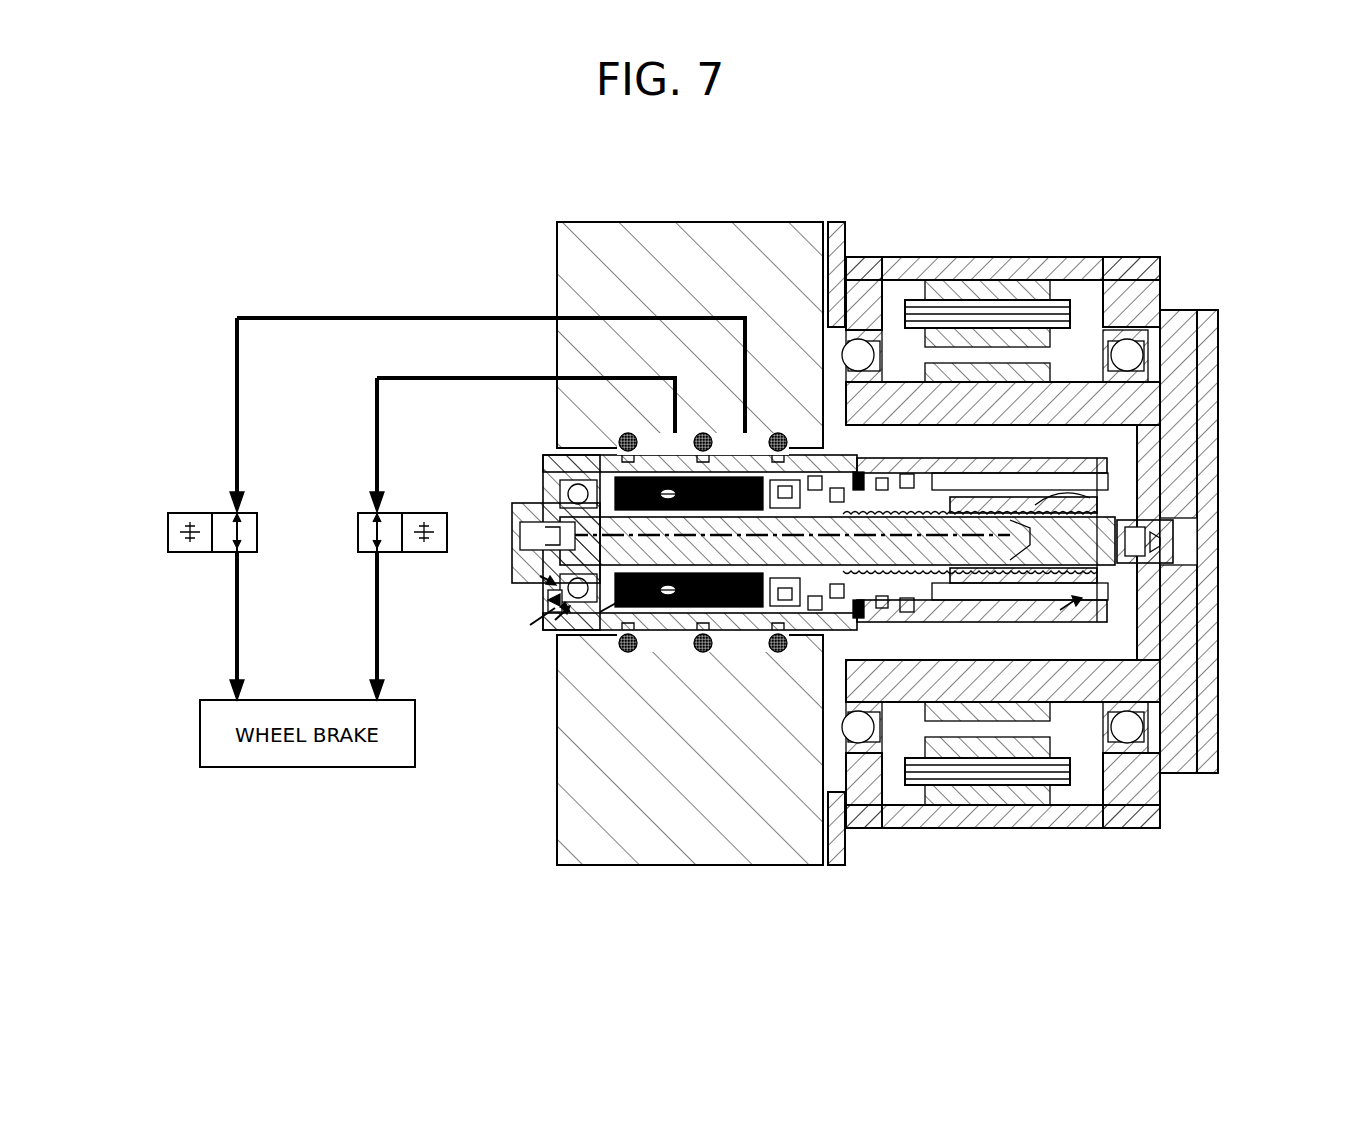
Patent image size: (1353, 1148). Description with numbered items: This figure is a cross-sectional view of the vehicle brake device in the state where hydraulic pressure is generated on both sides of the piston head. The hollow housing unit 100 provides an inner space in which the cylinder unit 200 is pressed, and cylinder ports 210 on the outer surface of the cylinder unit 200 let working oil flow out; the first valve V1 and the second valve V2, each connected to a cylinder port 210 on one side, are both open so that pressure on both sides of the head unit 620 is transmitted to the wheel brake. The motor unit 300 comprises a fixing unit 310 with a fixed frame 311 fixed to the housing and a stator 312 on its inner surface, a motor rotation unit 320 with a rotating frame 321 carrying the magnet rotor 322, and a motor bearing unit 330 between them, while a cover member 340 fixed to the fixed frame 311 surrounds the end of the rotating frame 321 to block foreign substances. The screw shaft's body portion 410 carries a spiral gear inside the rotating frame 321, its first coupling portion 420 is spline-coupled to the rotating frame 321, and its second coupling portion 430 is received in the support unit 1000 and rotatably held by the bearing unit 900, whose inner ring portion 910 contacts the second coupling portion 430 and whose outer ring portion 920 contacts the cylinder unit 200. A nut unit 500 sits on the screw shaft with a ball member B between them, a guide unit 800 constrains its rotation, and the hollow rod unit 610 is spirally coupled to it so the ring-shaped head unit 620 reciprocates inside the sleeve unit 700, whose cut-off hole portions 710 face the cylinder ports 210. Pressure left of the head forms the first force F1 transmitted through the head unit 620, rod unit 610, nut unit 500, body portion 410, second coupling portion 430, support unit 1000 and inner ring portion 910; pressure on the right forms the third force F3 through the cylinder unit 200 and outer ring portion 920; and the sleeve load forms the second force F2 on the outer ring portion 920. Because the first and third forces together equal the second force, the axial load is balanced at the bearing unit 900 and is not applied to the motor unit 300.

The housing unit 100 is at (583, 258).
The cylinder unit 200 is at (596, 632).
The cylinder port 210 is at (660, 478).
The motor unit 300 is at (1120, 240).
The fixing unit 310 is at (969, 487).
The fixed frame 311 is at (940, 268).
The stator 312 is at (930, 300).
The motor rotation unit 320 is at (986, 651).
The rotating frame 321 is at (955, 725).
The rotor 322 is at (1005, 745).
The motor bearing unit 330 is at (1128, 352).
The cover member 340 is at (1222, 534).
The body portion 410 is at (860, 720).
The first coupling portion 420 is at (1175, 522).
The second coupling portion 430 is at (550, 602).
The nut unit 500 is at (1100, 468).
The rod unit 610 is at (975, 497).
The head unit 620 is at (790, 480).
The sleeve unit 700 is at (575, 462).
The cut-off hole portion 710 is at (655, 470).
The guide unit 800 is at (1078, 615).
The bearing unit 900 is at (621, 528).
The inner ring portion 910 is at (560, 500).
The outer ring portion 920 is at (540, 470).
The support unit 1000 is at (518, 570).
The ball member B is at (1110, 495).
The first force F1 is at (540, 578).
The second force F2 is at (605, 615).
The third force F3 is at (556, 622).
The first valve V1 is at (362, 531).
The second valve V2 is at (170, 531).